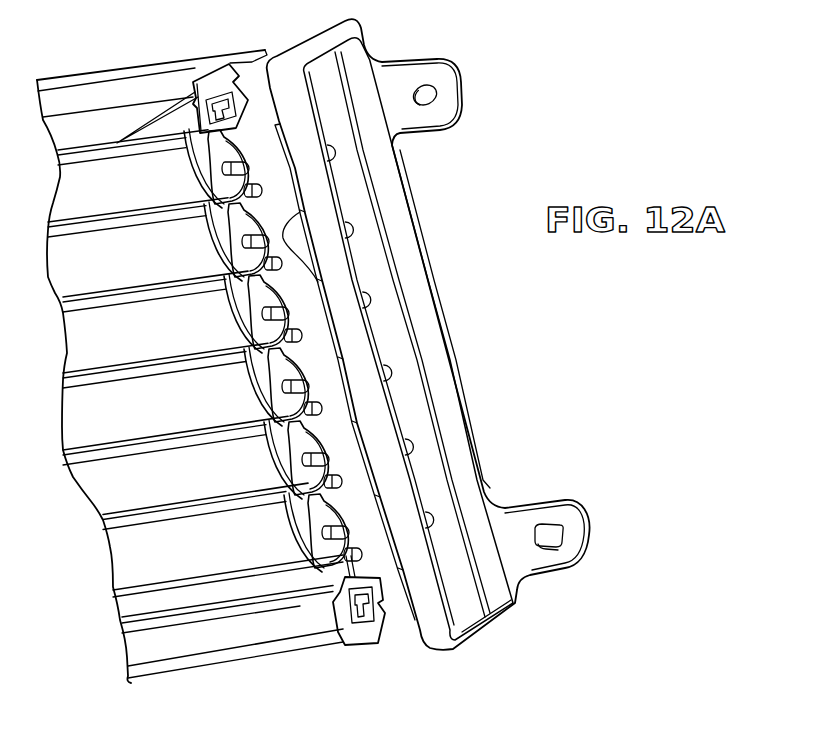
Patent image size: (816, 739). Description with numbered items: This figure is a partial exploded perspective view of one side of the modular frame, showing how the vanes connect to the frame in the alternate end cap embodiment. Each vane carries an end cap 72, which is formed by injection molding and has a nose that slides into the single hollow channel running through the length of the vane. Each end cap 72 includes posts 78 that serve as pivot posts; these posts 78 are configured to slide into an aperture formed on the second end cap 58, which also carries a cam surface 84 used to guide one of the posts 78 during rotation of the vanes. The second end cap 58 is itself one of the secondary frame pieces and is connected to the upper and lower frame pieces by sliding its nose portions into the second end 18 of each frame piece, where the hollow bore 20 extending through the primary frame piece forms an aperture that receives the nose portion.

The second end 18 is at (212, 69).
The hollow bore 20 is at (216, 88).
The second end cap 58 is at (357, 167).
The end cap 72 is at (243, 270).
The posts 78 is at (278, 252).
The cam surface 84 is at (333, 250).